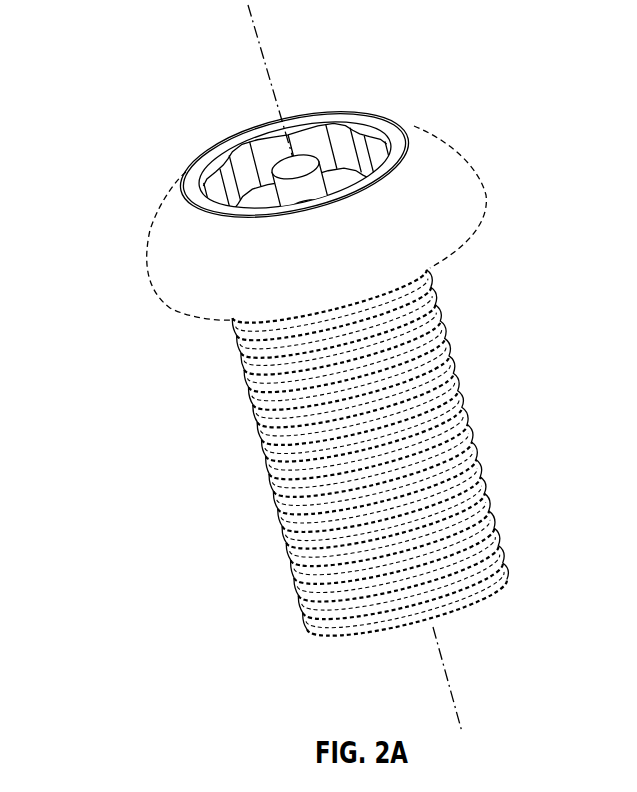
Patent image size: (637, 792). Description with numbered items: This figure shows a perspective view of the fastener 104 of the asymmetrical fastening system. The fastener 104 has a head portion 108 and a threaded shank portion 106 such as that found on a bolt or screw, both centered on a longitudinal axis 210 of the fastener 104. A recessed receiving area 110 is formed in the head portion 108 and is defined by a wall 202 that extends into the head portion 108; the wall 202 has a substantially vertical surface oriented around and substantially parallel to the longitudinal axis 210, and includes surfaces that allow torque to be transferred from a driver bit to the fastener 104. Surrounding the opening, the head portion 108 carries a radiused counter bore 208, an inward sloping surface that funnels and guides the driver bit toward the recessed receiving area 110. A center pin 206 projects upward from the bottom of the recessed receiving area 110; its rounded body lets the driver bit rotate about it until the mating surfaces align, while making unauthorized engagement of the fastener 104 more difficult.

The fastener 104 is at (112, 106).
The shank portion 106 is at (280, 447).
The head portion 108 is at (150, 277).
The recessed receiving area 110 is at (283, 166).
The wall 202 is at (300, 187).
The center pin 206 is at (300, 184).
The radiused counter bore 208 is at (406, 128).
The longitudinal axis 210 is at (263, 58).